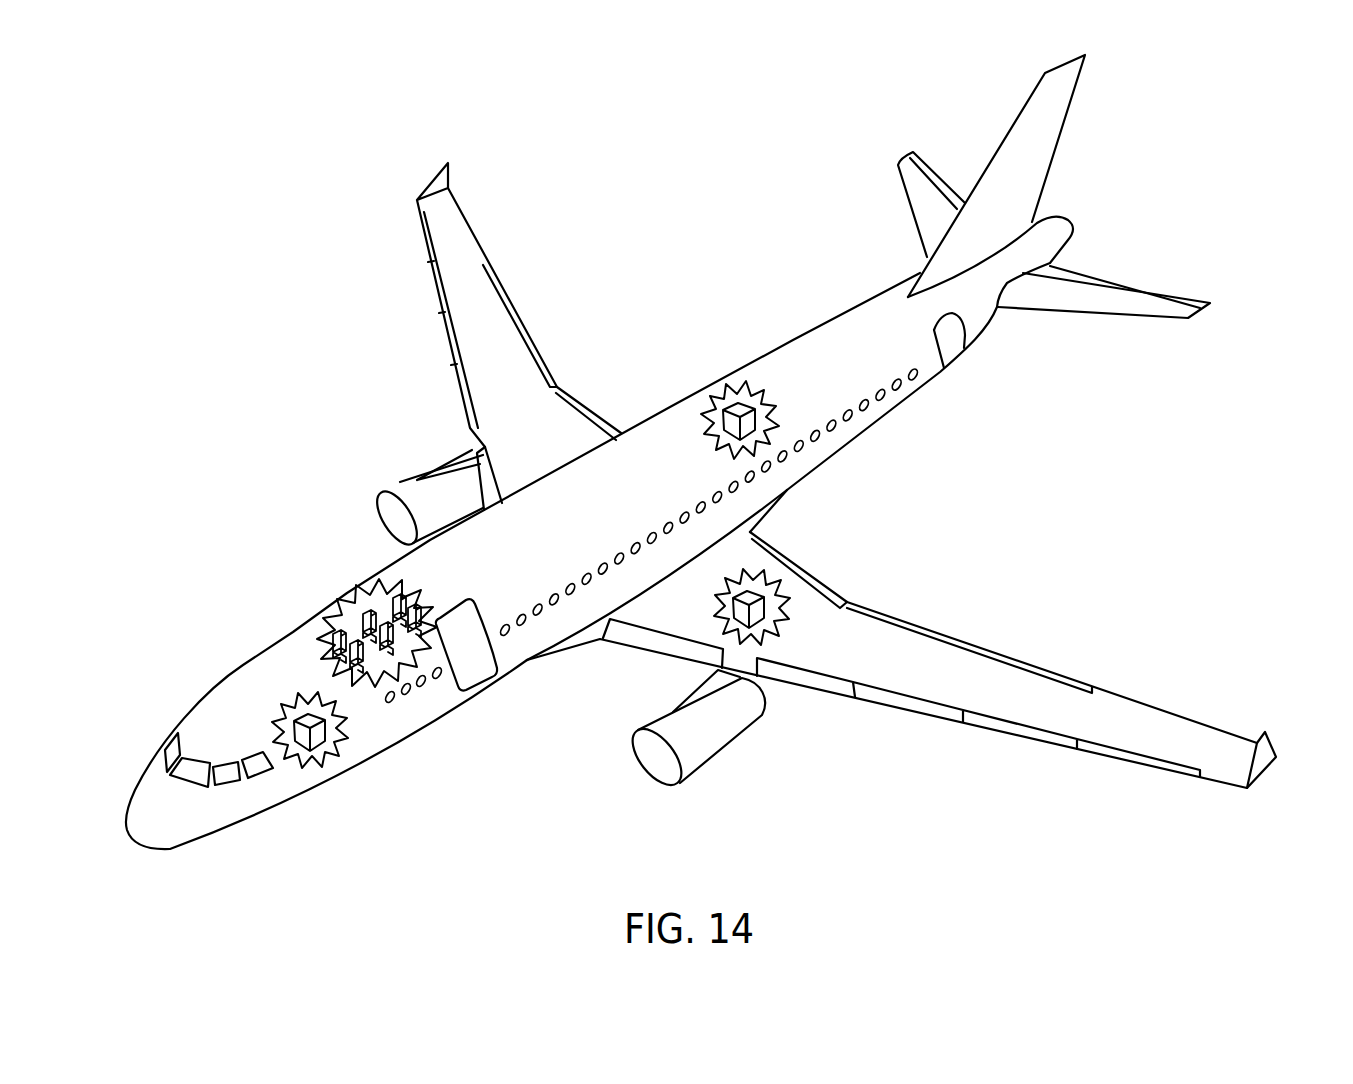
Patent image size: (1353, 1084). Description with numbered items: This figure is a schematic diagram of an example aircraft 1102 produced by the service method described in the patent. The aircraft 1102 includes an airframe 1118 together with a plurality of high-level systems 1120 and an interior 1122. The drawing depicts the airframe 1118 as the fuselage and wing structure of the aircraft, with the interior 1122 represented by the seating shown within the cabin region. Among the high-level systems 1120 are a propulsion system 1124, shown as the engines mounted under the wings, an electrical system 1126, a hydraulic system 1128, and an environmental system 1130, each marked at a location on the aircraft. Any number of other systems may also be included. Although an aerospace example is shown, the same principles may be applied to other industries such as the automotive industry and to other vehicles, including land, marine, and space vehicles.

The aircraft 1102 is at (247, 405).
The airframe 1118 is at (345, 587).
The high-level systems 1120 is at (1015, 558).
The interior 1122 is at (332, 642).
The propulsion system 1124 is at (403, 486).
The electrical system 1126 is at (307, 720).
The hydraulic system 1128 is at (770, 616).
The environmental system 1130 is at (738, 408).